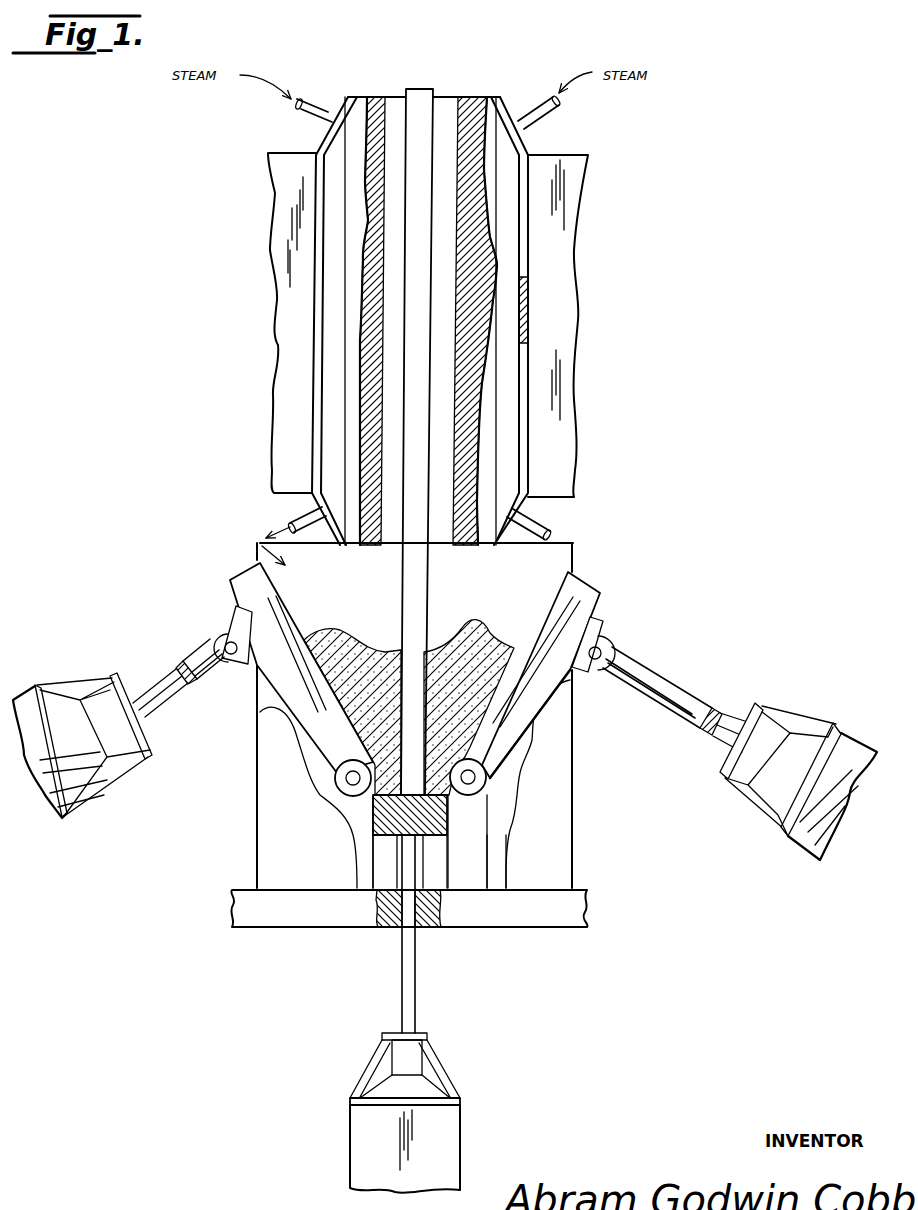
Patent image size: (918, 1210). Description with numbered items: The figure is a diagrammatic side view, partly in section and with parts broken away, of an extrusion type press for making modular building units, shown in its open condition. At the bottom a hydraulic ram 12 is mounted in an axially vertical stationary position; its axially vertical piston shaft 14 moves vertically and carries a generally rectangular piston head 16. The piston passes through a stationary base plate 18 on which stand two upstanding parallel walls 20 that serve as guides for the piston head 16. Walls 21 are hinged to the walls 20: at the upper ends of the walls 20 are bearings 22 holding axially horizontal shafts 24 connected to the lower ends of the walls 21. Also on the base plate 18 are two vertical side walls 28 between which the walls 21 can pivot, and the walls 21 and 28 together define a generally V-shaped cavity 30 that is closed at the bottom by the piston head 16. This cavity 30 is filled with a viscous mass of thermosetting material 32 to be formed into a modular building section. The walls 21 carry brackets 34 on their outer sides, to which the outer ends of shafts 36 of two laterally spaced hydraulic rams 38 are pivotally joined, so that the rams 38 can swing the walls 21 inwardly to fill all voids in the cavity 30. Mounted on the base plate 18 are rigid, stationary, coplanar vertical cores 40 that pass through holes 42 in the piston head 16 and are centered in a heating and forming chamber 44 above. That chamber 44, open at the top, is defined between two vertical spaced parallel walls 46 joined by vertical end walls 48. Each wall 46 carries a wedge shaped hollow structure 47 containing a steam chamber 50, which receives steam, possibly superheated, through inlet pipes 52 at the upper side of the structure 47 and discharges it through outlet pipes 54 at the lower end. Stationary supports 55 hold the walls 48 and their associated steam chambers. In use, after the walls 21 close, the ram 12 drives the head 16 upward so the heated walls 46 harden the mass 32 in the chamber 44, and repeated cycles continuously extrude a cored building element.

The hydraulic ram 12 is at (367, 1142).
The piston shaft 14 is at (402, 980).
The piston head 16 is at (425, 835).
The base plate 18 is at (255, 905).
The upstanding parallel walls 20 is at (473, 863).
The hinged walls 21 is at (583, 585).
The bearings 22 is at (478, 773).
The horizontal shafts 24 is at (478, 780).
The vertical side walls 28 is at (567, 683).
The V-shaped cavity 30 is at (260, 543).
The viscous mass of material 32 is at (495, 636).
The brackets 34 is at (248, 662).
The ram shafts 36 is at (210, 678).
The hydraulic rams 38 is at (67, 818).
The cores 40 is at (425, 118).
The holes 42 is at (370, 833).
The heating and forming chamber 44 is at (449, 380).
The vertical spaced parallel walls 46 is at (488, 256).
The wedge shaped hollow wall structure 47 is at (505, 198).
The end walls 48 is at (437, 125).
The steam chamber 50 is at (505, 312).
The inlet pipes 52 is at (312, 119).
The outlet pipes 54 is at (307, 514).
The stationary supports 55 is at (286, 383).